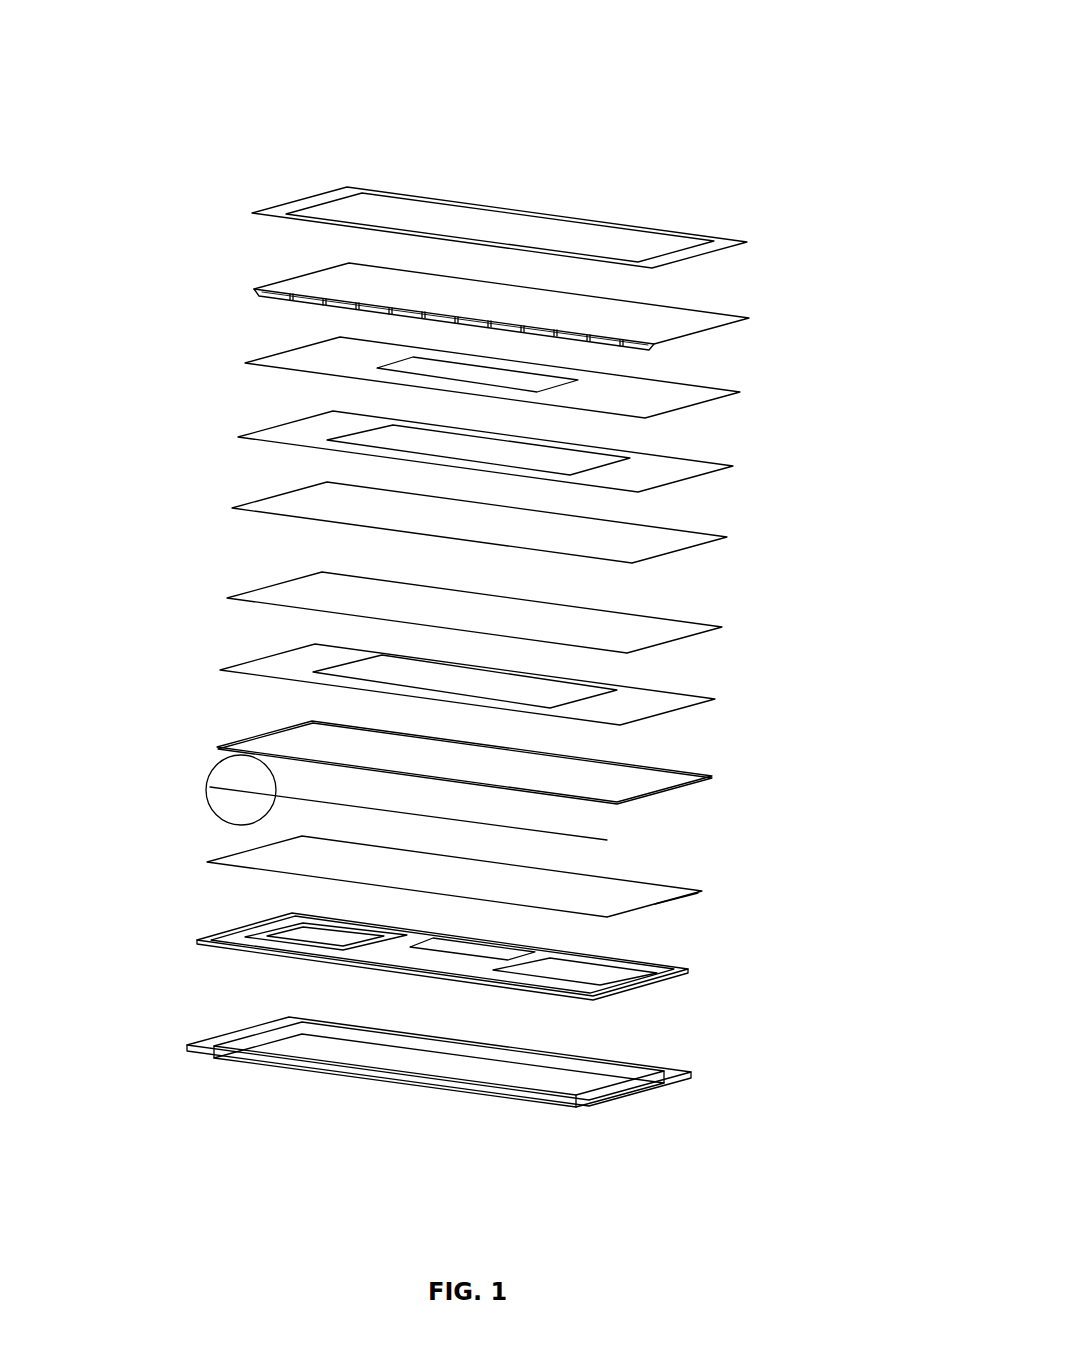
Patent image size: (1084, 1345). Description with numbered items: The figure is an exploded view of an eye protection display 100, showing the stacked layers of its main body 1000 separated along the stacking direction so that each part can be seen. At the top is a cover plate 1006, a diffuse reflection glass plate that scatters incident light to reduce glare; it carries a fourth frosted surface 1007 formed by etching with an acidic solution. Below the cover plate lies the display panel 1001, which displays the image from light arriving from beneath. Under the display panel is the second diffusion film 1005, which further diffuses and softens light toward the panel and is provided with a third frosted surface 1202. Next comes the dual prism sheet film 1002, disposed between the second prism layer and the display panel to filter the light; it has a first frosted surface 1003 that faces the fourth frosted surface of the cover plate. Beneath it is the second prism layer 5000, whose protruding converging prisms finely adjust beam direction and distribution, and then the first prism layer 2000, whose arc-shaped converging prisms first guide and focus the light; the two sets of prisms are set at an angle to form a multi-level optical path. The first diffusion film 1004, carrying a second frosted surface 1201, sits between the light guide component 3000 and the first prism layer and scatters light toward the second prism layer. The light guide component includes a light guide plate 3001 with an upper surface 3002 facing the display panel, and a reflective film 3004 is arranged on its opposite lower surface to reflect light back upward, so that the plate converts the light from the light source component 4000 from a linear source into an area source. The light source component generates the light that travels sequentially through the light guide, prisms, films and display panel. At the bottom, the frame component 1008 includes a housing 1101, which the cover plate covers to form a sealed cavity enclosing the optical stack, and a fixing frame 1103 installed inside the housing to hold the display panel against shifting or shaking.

The eye protection display 100 is at (230, 123).
The main body 1000 is at (205, 257).
The fourth frosted surface 1007 is at (488, 232).
The cover plate 1006 is at (737, 242).
The display panel 1001 is at (692, 326).
The third frosted surface 1202 is at (408, 365).
The second diffusion film 1005 is at (738, 393).
The dual prism sheet film 1002 is at (732, 465).
The first frosted surface 1003 is at (402, 442).
The second prism layer 5000 is at (727, 537).
The second frosted surface 1201 is at (392, 668).
The first prism layer 2000 is at (720, 628).
The first diffusion film 1004 is at (713, 700).
The light guide component 3000 is at (723, 767).
The light guide plate 3001 is at (217, 747).
The upper surface 3002 is at (308, 748).
The light source component 4000 is at (612, 842).
The reflective film 3004 is at (690, 890).
The fixing frame 1103 is at (693, 972).
The frame component 1008 is at (862, 1105).
The housing 1101 is at (660, 1080).